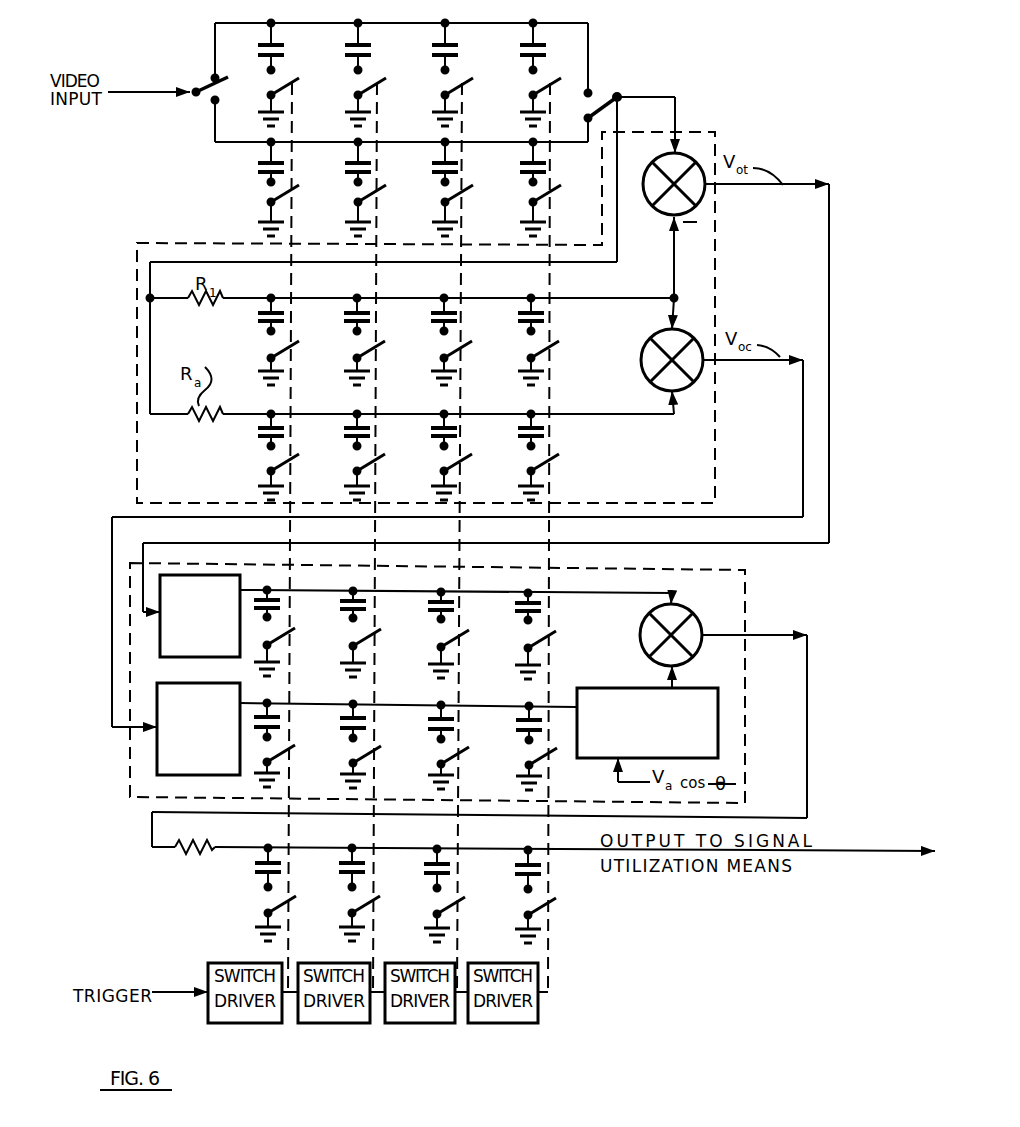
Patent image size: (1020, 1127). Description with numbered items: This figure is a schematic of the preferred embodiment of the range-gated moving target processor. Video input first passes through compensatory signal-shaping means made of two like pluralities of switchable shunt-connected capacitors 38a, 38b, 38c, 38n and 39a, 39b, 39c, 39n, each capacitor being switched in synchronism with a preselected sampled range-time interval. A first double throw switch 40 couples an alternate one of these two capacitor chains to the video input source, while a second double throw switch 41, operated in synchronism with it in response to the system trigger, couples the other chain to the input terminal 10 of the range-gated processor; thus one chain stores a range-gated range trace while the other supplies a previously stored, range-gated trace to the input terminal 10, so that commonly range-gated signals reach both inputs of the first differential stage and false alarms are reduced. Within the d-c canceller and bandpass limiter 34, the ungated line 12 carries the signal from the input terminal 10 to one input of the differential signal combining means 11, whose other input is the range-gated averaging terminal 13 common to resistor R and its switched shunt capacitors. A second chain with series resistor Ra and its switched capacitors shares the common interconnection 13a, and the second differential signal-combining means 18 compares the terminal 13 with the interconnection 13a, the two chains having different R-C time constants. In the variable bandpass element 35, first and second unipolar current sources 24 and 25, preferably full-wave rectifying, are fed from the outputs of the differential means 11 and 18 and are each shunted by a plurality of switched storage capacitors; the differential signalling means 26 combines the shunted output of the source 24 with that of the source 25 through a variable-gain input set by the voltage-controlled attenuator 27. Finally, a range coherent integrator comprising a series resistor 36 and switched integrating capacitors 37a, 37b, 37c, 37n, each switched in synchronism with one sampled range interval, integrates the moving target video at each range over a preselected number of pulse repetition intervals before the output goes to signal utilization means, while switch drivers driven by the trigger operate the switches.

The input terminal 10 is at (647, 97).
The differential signal combining means 11 is at (658, 190).
The line 12 is at (677, 125).
The common terminal 13 is at (270, 297).
The common interconnection 13a is at (270, 412).
The second differential signal-combining means 18 is at (652, 362).
The first unipolar current source 24 is at (183, 622).
The second unipolar current source 25 is at (181, 735).
The differential signalling means 26 is at (655, 632).
The voltage-controlled attenuator 27 is at (640, 690).
The d-c canceller and bandpass limiter 34 is at (688, 489).
The variable bandpass element 35 is at (733, 603).
The series resistor 36 is at (197, 855).
The switched integrating capacitor 37a is at (258, 862).
The switched integrating capacitor 37b is at (343, 862).
The switched integrating capacitor 37c is at (427, 862).
The switched integrating capacitor 37n is at (518, 863).
The switchable shunt connected capacitor 38a is at (276, 45).
The switchable shunt connected capacitor 38b is at (364, 45).
The switchable shunt connected capacitor 38c is at (451, 45).
The switchable shunt connected capacitor 38n is at (540, 56).
The switchable shunt connected capacitor 39a is at (258, 162).
The switchable shunt connected capacitor 39b is at (345, 165).
The switchable shunt connected capacitor 39c is at (432, 165).
The switchable shunt connected capacitor 39n is at (518, 165).
The first double throw switch 40 is at (206, 97).
The second double throw switch 41 is at (614, 95).